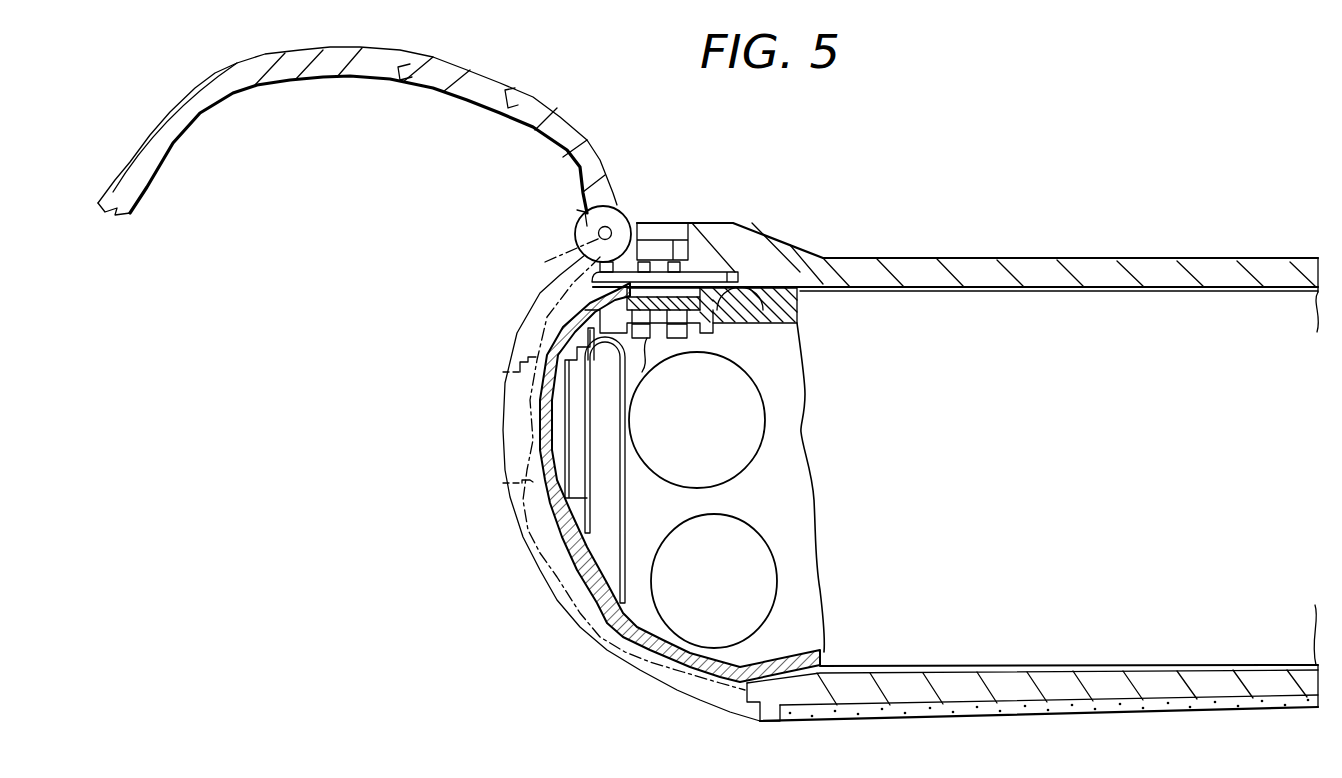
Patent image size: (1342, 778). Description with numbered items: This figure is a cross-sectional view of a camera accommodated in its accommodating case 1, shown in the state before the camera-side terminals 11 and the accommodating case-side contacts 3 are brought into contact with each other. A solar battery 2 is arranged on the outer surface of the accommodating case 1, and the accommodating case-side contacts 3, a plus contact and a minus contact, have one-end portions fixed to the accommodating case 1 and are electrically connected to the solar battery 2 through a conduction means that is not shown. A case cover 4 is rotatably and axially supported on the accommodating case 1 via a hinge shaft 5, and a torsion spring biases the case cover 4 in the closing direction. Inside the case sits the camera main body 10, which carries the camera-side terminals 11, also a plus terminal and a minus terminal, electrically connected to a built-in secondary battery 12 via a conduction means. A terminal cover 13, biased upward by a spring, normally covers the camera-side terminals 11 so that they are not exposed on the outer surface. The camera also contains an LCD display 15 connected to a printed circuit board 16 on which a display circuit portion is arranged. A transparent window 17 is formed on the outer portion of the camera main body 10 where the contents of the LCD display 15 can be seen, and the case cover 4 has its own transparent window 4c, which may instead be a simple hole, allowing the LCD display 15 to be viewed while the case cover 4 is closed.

The accommodating case 1 is at (958, 267).
The solar battery 2 is at (961, 716).
The accommodating case-side contacts 3 is at (645, 262).
The case cover 4 is at (545, 107).
The transparent window 4c is at (484, 82).
The hinge shaft 5 is at (613, 208).
The camera main body 10 is at (1034, 312).
The camera-side terminals 11 is at (708, 336).
The secondary battery 12 is at (742, 455).
The terminal cover 13 is at (594, 286).
The LCD display 15 is at (565, 463).
The printed circuit board 16 is at (628, 525).
The transparent window 17 is at (544, 428).